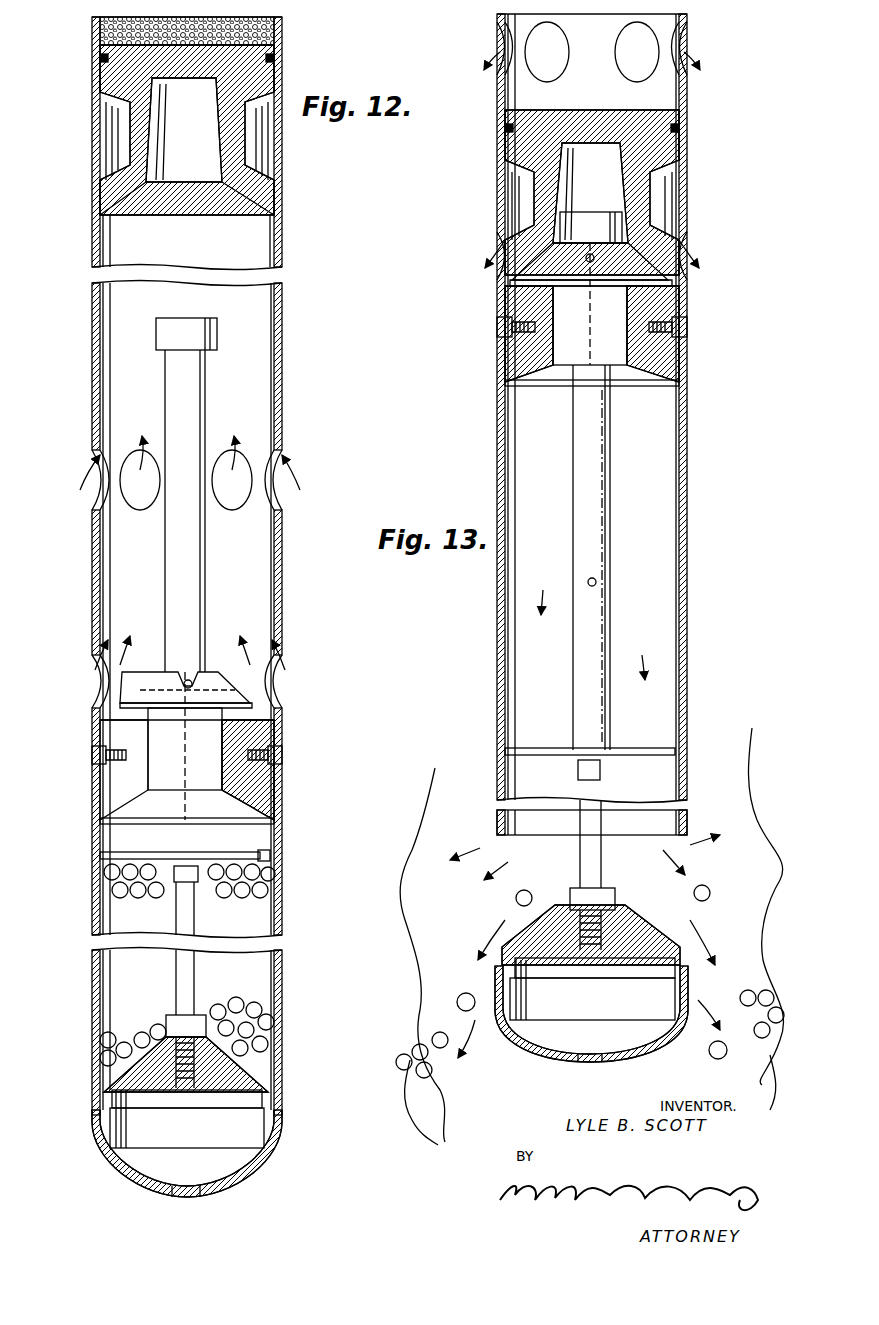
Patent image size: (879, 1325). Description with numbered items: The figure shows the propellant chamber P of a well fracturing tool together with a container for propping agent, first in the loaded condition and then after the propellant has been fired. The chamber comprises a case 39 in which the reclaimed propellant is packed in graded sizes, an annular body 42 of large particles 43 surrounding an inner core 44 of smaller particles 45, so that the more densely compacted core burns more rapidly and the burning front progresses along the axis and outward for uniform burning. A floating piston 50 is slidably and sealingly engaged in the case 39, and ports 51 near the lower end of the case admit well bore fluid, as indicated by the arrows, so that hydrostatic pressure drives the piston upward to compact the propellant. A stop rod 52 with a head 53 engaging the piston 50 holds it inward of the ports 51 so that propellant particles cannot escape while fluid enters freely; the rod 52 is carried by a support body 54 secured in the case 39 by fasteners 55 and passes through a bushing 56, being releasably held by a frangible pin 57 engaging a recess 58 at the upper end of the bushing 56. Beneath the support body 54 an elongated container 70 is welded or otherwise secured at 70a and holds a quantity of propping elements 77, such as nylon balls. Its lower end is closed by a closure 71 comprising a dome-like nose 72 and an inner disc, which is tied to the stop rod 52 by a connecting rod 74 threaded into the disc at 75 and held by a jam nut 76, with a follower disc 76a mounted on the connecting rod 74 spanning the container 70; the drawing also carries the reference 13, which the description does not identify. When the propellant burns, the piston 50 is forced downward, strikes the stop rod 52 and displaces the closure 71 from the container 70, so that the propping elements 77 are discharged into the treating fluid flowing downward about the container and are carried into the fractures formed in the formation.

In FIG. 12, the propellant chamber P is at (98, 38).
In FIG. 12, the conical deflector 13 is at (250, 1072).
In FIG. 13, the conical deflector 13 is at (640, 932).
In FIG. 12, the case 39 is at (96, 204).
In FIG. 13, the case 39 is at (690, 102).
In FIG. 12, the annular body of large particles 42 is at (286, 36).
In FIG. 12, the large particles 43 is at (100, 48).
In FIG. 12, the inner core 44 is at (215, 55).
In FIG. 12, the smaller particles 45 is at (178, 58).
In FIG. 12, the floating piston 50 is at (240, 150).
In FIG. 13, the floating piston 50 is at (540, 196).
In FIG. 12, the ports 51 is at (97, 506).
In FIG. 13, the ports 51 is at (500, 70).
In FIG. 12, the rod 52 is at (200, 585).
In FIG. 13, the rod 52 is at (595, 522).
In FIG. 12, the head 53 is at (185, 325).
In FIG. 13, the head 53 is at (585, 230).
In FIG. 12, the support body 54 is at (258, 783).
In FIG. 13, the support body 54 is at (524, 300).
In FIG. 12, the fasteners 55 is at (93, 755).
In FIG. 13, the fasteners 55 is at (498, 328).
In FIG. 12, the bushing 56 is at (148, 730).
In FIG. 13, the bushing 56 is at (592, 366).
In FIG. 12, the frangible pin 57 is at (186, 672).
In FIG. 13, the frangible pin 57 is at (596, 582).
In FIG. 12, the recess 58 is at (196, 672).
In FIG. 13, the recess 58 is at (598, 262).
In FIG. 12, the container 70 is at (92, 965).
In FIG. 13, the container 70 is at (688, 826).
In FIG. 12, the weld 70a is at (283, 806).
In FIG. 13, the weld 70a is at (690, 378).
In FIG. 12, the closure 71 is at (283, 1126).
In FIG. 13, the closure 71 is at (496, 996).
In FIG. 12, the dome-like nose 72 is at (240, 1190).
In FIG. 13, the dome-like nose 72 is at (545, 1050).
In FIG. 12, the connecting rod 74 is at (196, 904).
In FIG. 13, the connecting rod 74 is at (603, 885).
In FIG. 12, the threaded connection 75 is at (190, 1062).
In FIG. 13, the threaded connection 75 is at (588, 928).
In FIG. 12, the jam nut 76 is at (198, 884).
In FIG. 13, the jam nut 76 is at (578, 772).
In FIG. 12, the disc 76a is at (210, 856).
In FIG. 13, the disc 76a is at (618, 752).
In FIG. 12, the propping elements 77 is at (128, 892).
In FIG. 13, the propping elements 77 is at (703, 884).